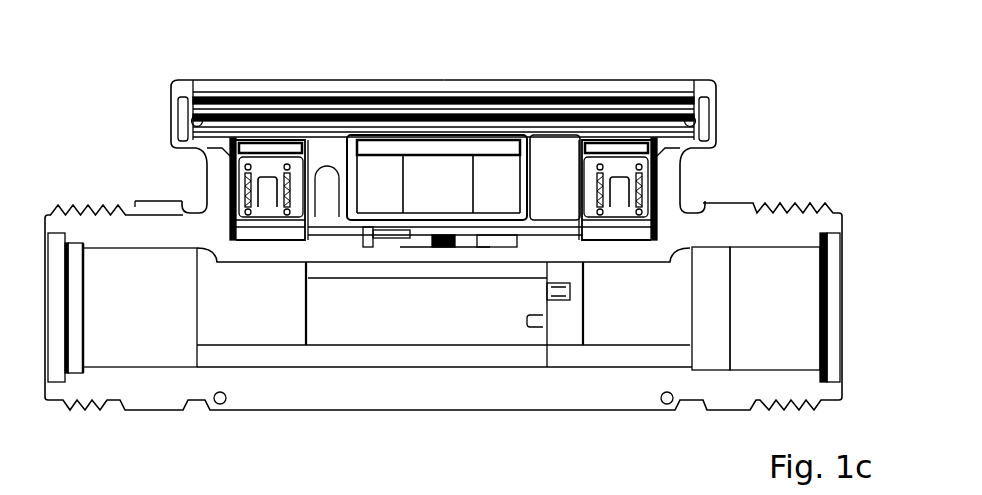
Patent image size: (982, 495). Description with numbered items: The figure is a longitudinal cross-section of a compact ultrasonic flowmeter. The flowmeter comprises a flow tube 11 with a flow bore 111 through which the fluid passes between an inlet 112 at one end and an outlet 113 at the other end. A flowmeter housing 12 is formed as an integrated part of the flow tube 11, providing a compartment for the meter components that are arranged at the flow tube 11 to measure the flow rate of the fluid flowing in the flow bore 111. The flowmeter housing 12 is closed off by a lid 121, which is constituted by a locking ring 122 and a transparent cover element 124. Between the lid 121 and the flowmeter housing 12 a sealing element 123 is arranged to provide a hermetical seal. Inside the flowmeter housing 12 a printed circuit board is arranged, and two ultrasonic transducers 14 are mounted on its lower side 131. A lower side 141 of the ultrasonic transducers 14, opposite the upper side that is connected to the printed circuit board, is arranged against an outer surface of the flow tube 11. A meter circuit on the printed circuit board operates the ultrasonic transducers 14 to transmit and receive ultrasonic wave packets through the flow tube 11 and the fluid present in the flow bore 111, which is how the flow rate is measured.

The flow tube 11 is at (467, 383).
The flow bore 111 is at (512, 331).
The inlet 112 is at (52, 283).
The outlet 113 is at (832, 310).
The flowmeter housing 12 is at (680, 192).
The lid 121 is at (181, 88).
The locking ring 122 is at (716, 82).
The sealing element 123 is at (696, 118).
The transparent cover element 124 is at (328, 102).
The lower side of the printed circuit board 131 is at (620, 240).
The ultrasonic transducers 14 is at (285, 237).
The lower side of the ultrasonic transducers 141 is at (267, 256).